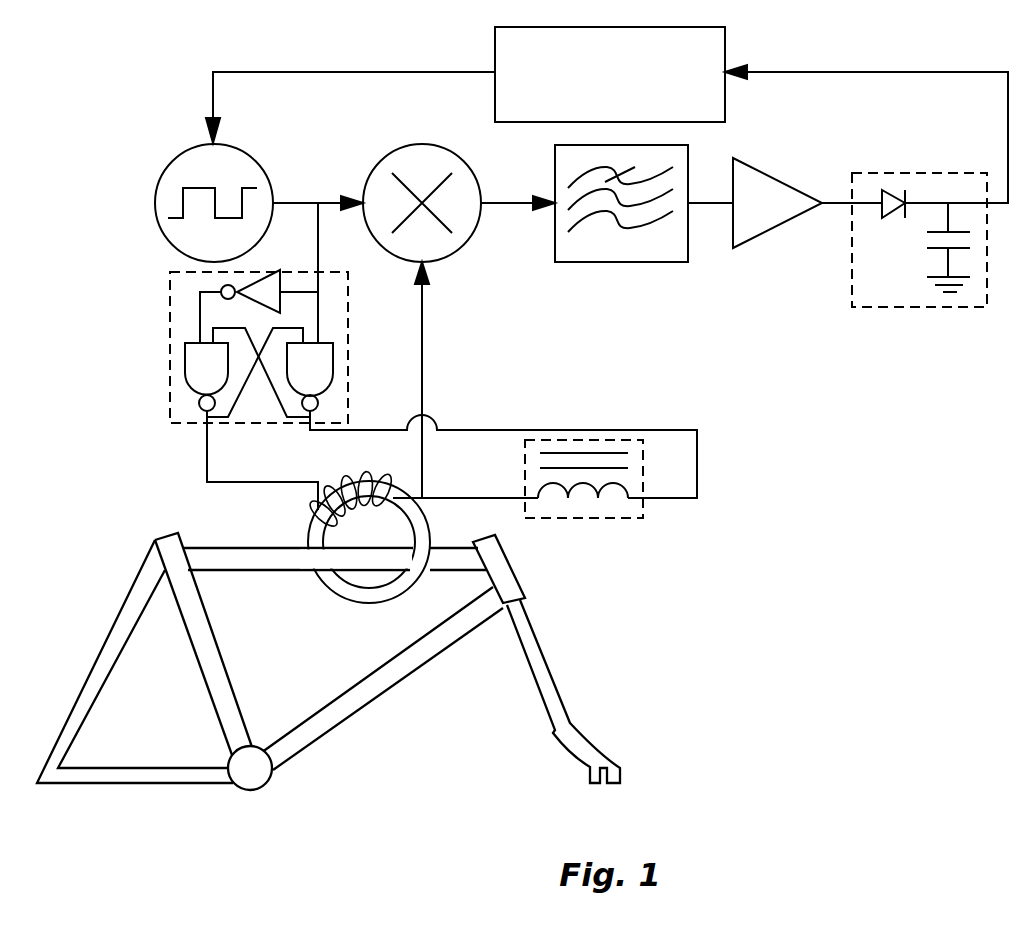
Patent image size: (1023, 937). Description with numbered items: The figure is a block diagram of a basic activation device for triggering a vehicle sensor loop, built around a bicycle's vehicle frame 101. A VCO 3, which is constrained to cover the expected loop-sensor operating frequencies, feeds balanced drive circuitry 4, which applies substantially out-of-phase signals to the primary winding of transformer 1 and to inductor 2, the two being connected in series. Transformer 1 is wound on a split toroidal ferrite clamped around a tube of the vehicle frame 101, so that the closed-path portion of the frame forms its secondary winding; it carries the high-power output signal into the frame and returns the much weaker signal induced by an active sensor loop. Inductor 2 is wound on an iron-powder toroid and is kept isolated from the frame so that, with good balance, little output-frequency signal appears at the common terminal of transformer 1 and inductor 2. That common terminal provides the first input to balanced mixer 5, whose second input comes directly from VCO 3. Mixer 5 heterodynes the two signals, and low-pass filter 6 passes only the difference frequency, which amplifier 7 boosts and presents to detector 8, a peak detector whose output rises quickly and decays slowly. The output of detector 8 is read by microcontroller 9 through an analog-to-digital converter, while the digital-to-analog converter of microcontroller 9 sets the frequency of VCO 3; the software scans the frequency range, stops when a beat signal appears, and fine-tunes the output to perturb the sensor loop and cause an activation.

The transformer 1 is at (356, 537).
The inductor 2 is at (584, 497).
The VCO 3 is at (200, 203).
The balanced drive circuitry 4 is at (248, 346).
The balanced mixer 5 is at (419, 197).
The low-pass filter 6 is at (621, 229).
The amplifier 7 is at (777, 220).
The detector 8 is at (919, 219).
The microcontroller 9 is at (592, 74).
The vehicle frame 101 is at (328, 661).